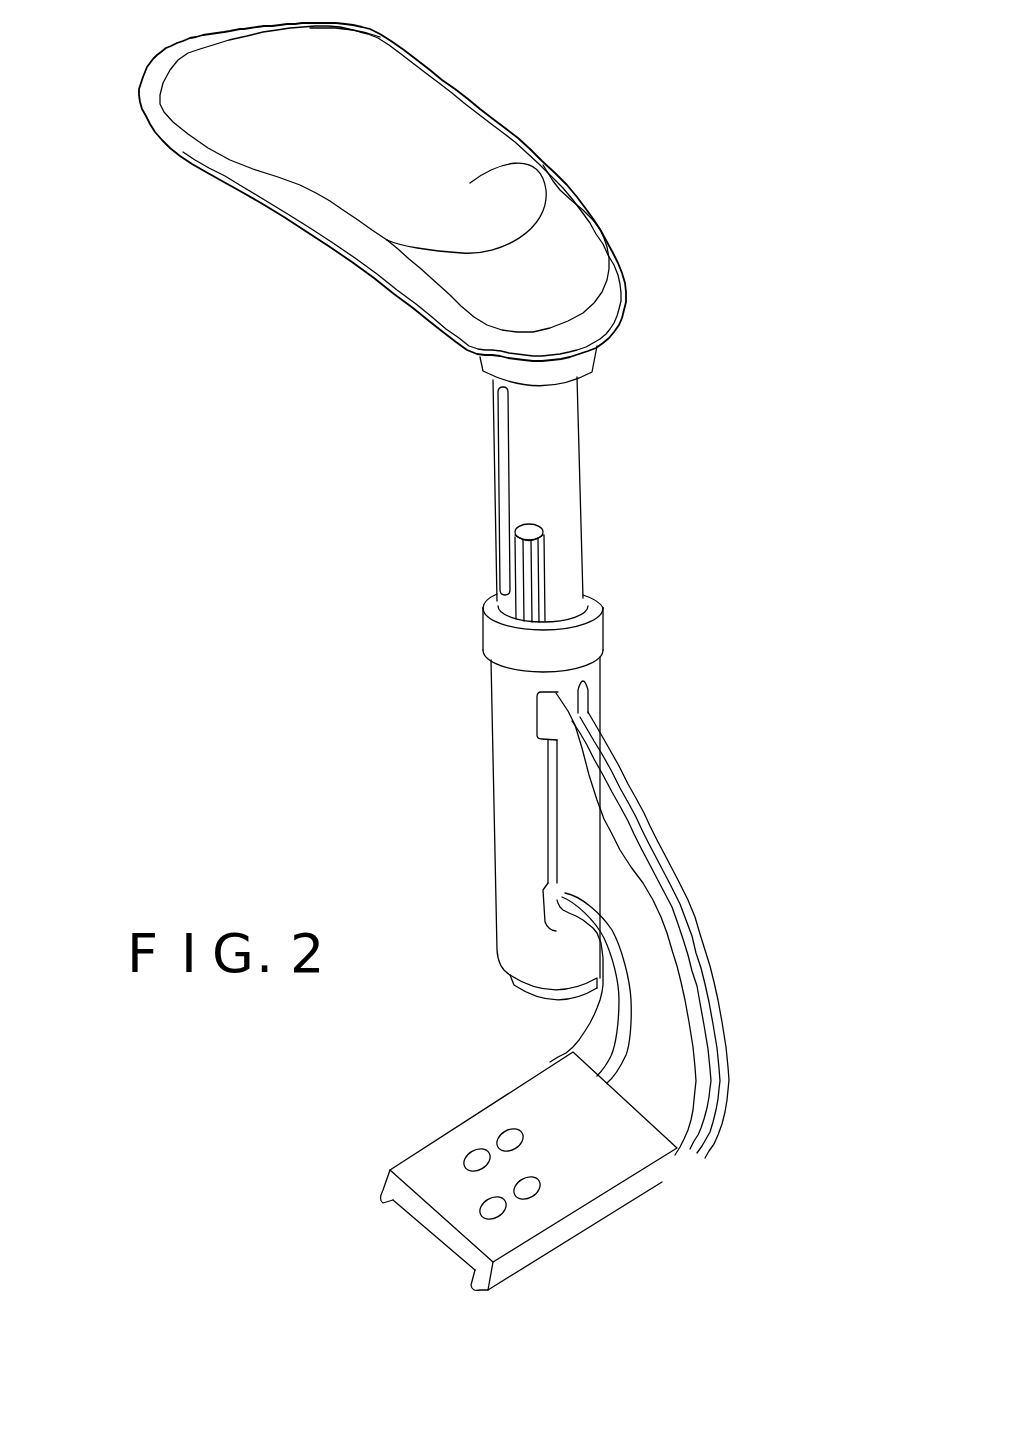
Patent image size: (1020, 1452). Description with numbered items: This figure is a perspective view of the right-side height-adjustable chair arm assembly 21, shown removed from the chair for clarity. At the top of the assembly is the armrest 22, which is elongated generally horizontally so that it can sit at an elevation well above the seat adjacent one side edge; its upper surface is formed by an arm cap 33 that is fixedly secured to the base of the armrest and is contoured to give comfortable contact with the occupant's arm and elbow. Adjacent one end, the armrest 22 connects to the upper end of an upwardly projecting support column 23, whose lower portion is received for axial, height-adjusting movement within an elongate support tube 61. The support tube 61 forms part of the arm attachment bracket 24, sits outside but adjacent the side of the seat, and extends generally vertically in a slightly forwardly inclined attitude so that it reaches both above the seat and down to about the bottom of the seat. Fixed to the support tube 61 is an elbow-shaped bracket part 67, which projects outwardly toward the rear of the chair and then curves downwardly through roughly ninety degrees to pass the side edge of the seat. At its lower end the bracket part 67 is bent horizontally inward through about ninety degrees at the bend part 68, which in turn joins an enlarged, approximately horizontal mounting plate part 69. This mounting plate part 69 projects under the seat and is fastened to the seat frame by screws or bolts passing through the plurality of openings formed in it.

The height-adjustable chair arm assembly 21 is at (205, 282).
The armrest 22 is at (520, 133).
The arm cap 33 is at (532, 160).
The support column 23 is at (560, 417).
The support tube 61 is at (503, 718).
The arm attachment bracket 24 is at (610, 985).
The bracket part 67 is at (593, 840).
The bend part 68 is at (698, 1090).
The mounting plate part 69 is at (600, 1163).